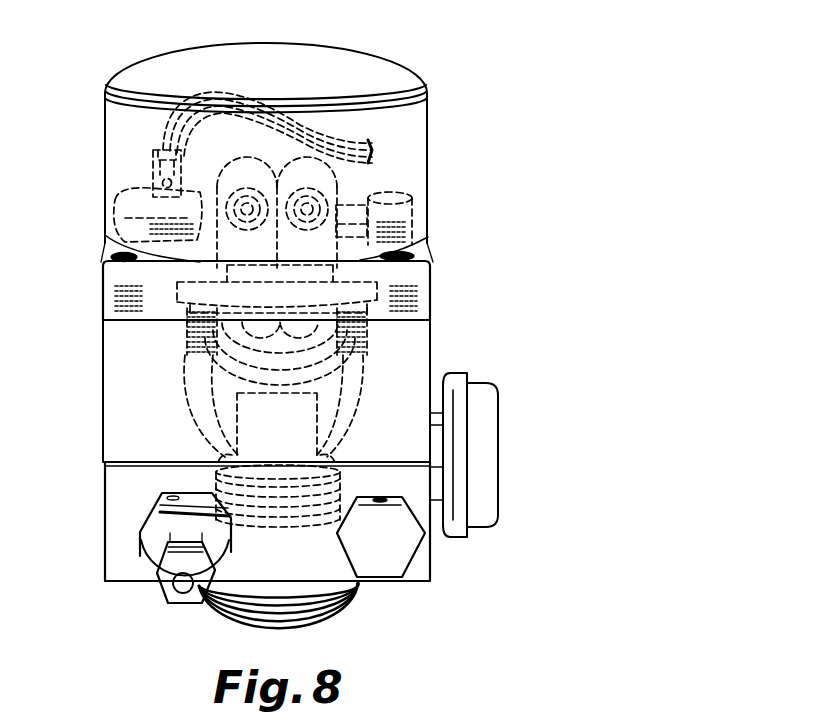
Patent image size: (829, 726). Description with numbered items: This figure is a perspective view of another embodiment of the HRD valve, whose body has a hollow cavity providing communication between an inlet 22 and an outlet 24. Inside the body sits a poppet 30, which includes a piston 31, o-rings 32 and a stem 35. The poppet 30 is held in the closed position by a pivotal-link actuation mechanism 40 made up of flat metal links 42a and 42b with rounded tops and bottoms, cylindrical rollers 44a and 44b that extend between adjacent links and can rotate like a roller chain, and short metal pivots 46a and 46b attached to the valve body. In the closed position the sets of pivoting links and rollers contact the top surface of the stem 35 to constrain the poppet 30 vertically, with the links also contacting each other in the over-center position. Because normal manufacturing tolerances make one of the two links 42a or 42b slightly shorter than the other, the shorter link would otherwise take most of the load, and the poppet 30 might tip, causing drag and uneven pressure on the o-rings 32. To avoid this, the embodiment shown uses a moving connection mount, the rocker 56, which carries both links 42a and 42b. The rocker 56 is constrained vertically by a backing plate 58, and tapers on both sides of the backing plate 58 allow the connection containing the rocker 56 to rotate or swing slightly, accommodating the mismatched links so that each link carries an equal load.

The pivotal-link actuation mechanism 40 is at (368, 86).
The link 42a is at (225, 153).
The link 42b is at (335, 232).
The roller 44a is at (222, 205).
The roller 44b is at (373, 150).
The backing plate 58 is at (385, 272).
The rocker 56 is at (375, 312).
The pivot 46a is at (200, 334).
The pivot 46b is at (345, 346).
The poppet 30 is at (348, 420).
The stem 35 is at (238, 427).
The o-rings 32 is at (340, 472).
The piston 31 is at (335, 478).
The outlet 24 is at (500, 433).
The inlet 22 is at (345, 613).